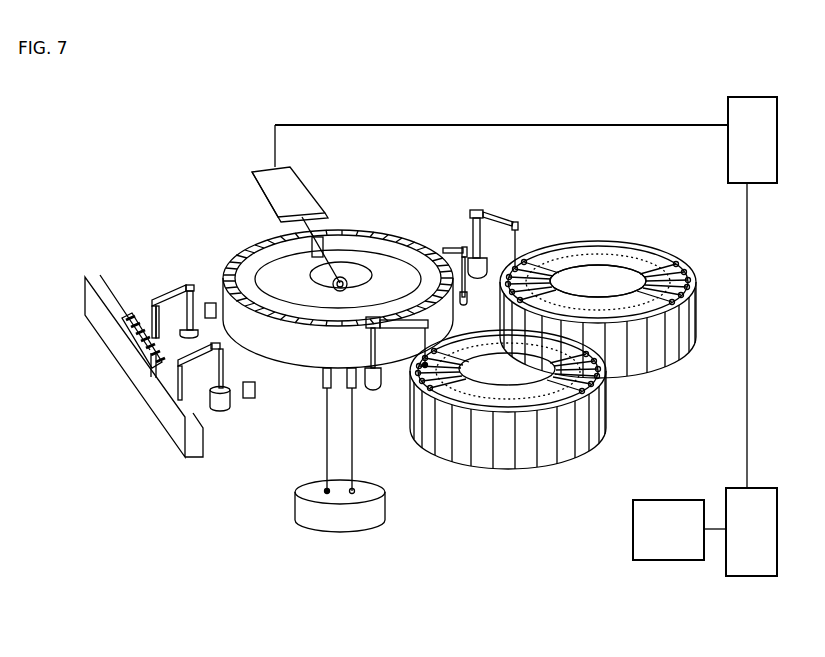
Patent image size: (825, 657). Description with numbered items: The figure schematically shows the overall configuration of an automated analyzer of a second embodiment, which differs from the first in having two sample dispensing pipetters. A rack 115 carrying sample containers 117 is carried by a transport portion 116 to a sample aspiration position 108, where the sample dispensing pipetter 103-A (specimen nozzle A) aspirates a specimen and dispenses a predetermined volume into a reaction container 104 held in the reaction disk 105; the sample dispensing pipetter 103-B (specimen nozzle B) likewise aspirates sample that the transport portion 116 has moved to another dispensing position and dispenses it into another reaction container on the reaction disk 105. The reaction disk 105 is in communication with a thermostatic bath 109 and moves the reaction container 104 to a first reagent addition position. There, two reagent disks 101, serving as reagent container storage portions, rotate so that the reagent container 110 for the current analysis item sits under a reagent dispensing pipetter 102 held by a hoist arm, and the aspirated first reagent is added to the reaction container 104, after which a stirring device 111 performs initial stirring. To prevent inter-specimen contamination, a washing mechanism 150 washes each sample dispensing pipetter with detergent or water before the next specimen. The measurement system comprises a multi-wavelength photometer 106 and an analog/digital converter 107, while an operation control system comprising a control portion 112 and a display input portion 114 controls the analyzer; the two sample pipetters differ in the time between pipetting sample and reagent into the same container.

The reagent disk 101 is at (667, 252).
The reagent dispensing pipetter 102 is at (375, 386).
The sample dispensing pipetter 103-A is at (180, 287).
The sample dispensing pipetter 103-B is at (230, 384).
The reaction container 104 is at (385, 238).
The reaction disk 105 is at (262, 257).
The multi-wavelength photometer 106 is at (313, 203).
The analog/digital converter 107 is at (728, 155).
The sample aspiration position 108 is at (135, 362).
The thermostatic bath 109 is at (352, 512).
The reagent container 110 is at (563, 243).
The stirring device 111 is at (447, 247).
The control portion 112 is at (732, 548).
The display input portion 114 is at (633, 548).
The rack 115 is at (132, 345).
The transport portion 116 is at (100, 272).
The sample container 117 is at (136, 313).
The washing mechanism 150 is at (208, 300).